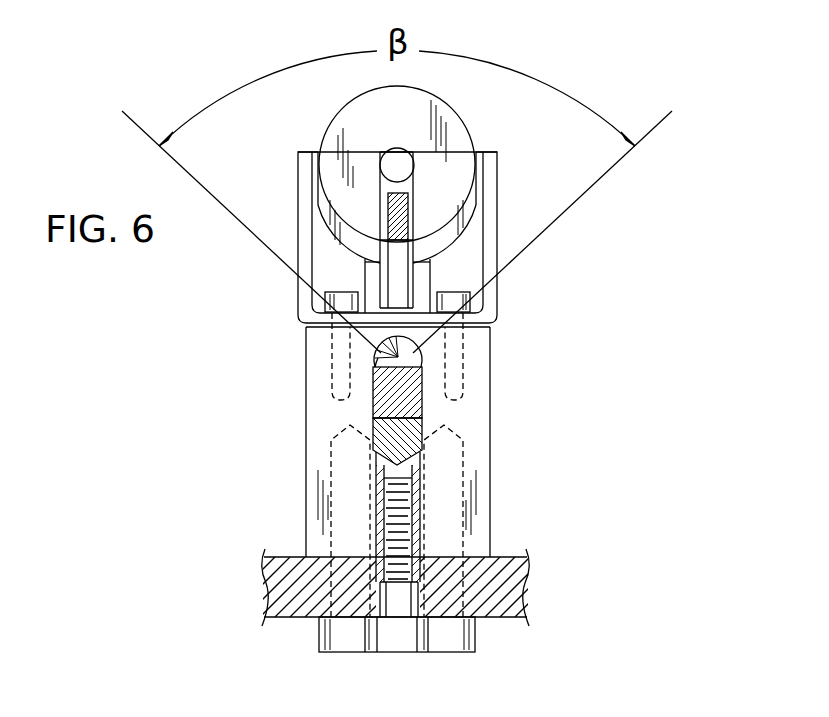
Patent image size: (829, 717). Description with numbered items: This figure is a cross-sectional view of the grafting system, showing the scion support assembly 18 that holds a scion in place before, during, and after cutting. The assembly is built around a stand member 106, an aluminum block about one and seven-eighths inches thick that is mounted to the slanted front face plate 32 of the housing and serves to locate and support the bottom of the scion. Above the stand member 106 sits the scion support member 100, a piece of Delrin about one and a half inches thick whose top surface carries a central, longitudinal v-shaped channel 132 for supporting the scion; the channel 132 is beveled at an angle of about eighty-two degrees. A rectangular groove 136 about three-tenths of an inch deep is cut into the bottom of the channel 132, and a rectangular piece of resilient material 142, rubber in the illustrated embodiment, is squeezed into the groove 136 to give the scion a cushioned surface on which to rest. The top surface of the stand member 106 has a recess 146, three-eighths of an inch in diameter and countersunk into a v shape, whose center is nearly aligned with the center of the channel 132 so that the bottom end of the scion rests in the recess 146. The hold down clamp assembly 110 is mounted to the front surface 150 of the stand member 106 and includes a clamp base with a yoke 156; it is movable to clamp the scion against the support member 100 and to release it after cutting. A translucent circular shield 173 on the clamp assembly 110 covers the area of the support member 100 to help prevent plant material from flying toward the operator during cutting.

The scion support assembly 18 is at (622, 289).
The slanted front face plate 32 is at (288, 557).
The scion support member 100 is at (423, 425).
The stand member 106 is at (490, 392).
The hold down clamp assembly 110 is at (292, 210).
The v-shaped channel 132 is at (416, 350).
The rectangular groove 136 is at (423, 403).
The resilient material 142 is at (376, 363).
The recess 146 is at (396, 357).
The front surface 150 is at (332, 312).
The yoke 156 is at (436, 260).
The circular shield 173 is at (458, 121).